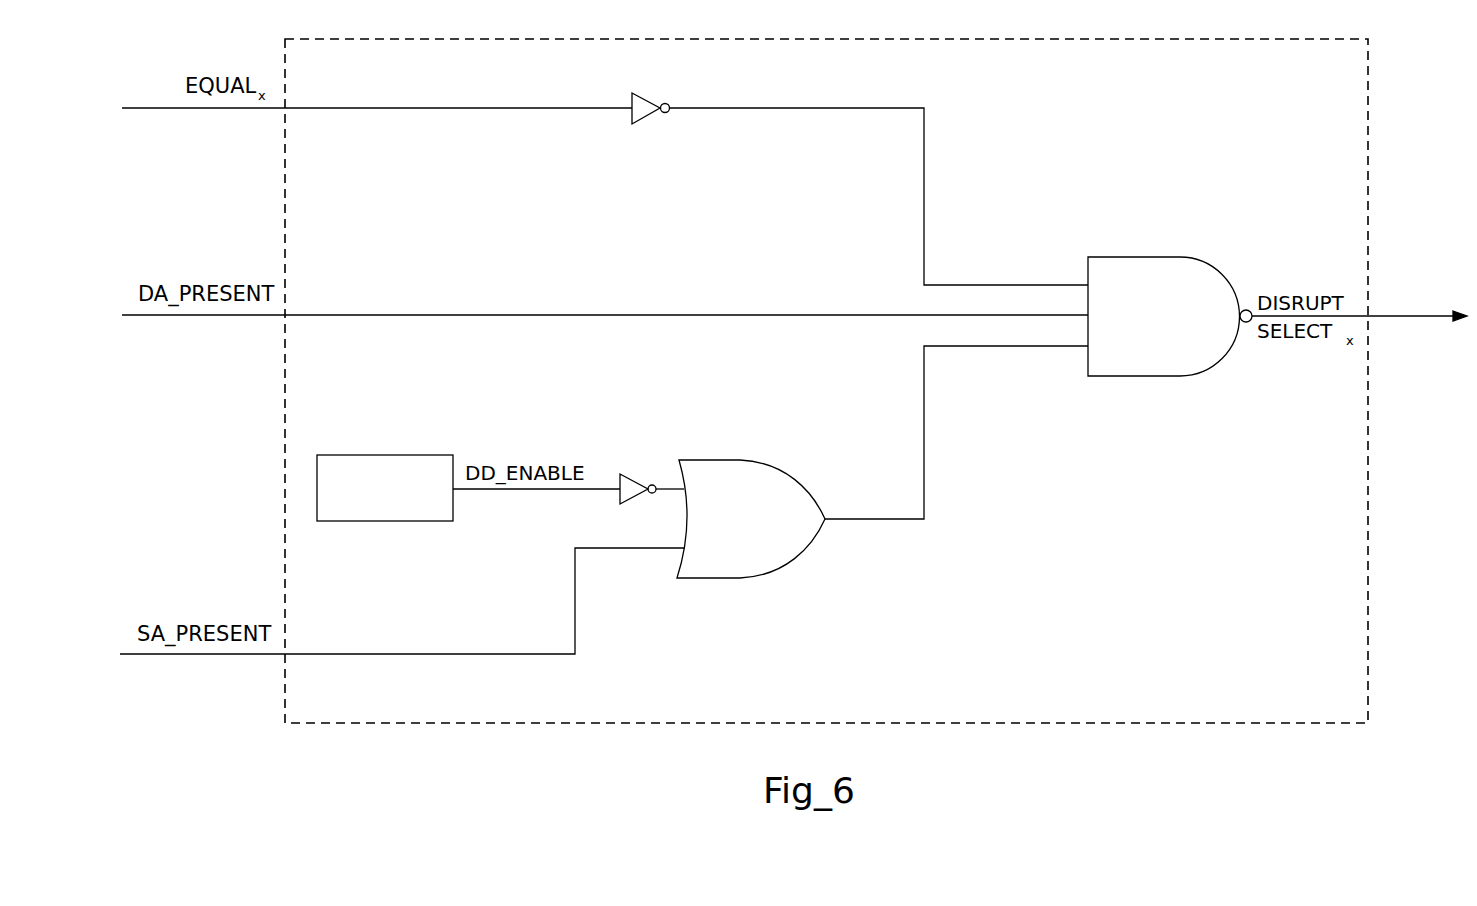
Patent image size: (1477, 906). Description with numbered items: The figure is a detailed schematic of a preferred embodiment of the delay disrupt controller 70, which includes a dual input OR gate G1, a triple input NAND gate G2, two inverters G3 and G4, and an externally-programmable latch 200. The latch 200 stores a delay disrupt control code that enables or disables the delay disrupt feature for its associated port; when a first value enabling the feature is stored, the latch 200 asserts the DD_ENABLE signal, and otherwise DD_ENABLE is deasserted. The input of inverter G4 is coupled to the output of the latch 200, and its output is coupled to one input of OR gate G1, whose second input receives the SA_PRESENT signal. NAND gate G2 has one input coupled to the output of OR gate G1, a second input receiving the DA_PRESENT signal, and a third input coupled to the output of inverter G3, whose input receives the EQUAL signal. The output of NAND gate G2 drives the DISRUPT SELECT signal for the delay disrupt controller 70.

The delay disrupt controller 70 is at (793, 40).
The inverter G3 is at (644, 94).
The inverter G4 is at (636, 474).
The dual input OR gate G1 is at (772, 463).
The triple input NAND gate G2 is at (1197, 258).
The externally-programmable latch 200 is at (394, 445).